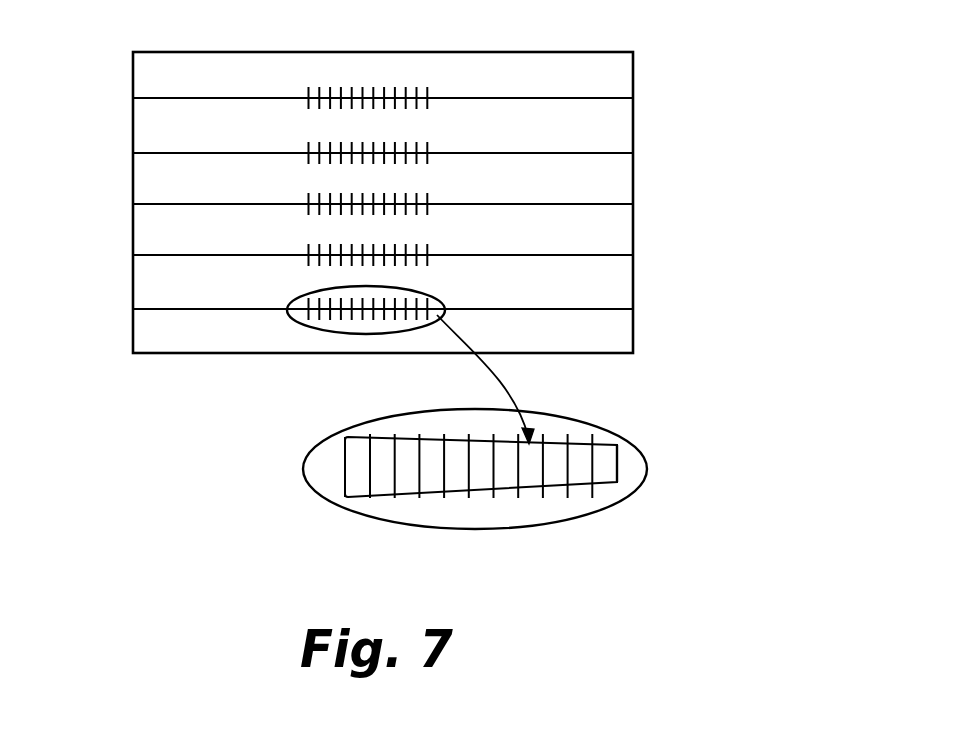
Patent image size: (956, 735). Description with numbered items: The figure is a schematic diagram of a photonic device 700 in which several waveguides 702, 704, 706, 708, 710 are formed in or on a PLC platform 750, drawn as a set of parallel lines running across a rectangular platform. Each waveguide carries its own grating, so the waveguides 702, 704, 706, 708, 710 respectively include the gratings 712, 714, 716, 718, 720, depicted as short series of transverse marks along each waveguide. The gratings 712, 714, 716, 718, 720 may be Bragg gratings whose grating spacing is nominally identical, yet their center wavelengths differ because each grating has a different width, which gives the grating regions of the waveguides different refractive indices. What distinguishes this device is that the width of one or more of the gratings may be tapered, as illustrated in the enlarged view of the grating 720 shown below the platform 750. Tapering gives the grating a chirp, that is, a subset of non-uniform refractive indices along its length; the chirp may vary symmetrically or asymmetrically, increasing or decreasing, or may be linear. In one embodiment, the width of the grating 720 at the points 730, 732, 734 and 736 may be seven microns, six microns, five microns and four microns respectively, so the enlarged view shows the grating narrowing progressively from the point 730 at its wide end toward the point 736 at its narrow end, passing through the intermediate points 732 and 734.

The photonic device 700 is at (82, 396).
The waveguide 702 is at (142, 99).
The waveguide 704 is at (142, 154).
The waveguide 706 is at (142, 205).
The waveguide 708 is at (142, 256).
The waveguide 710 is at (142, 310).
The grating 712 is at (428, 105).
The grating 714 is at (428, 160).
The grating 716 is at (428, 211).
The grating 718 is at (428, 262).
The grating 720 is at (446, 313).
The point 730 is at (350, 498).
The point 732 is at (418, 497).
The point 734 is at (543, 441).
The point 736 is at (618, 485).
The PLC platform 750 is at (583, 52).